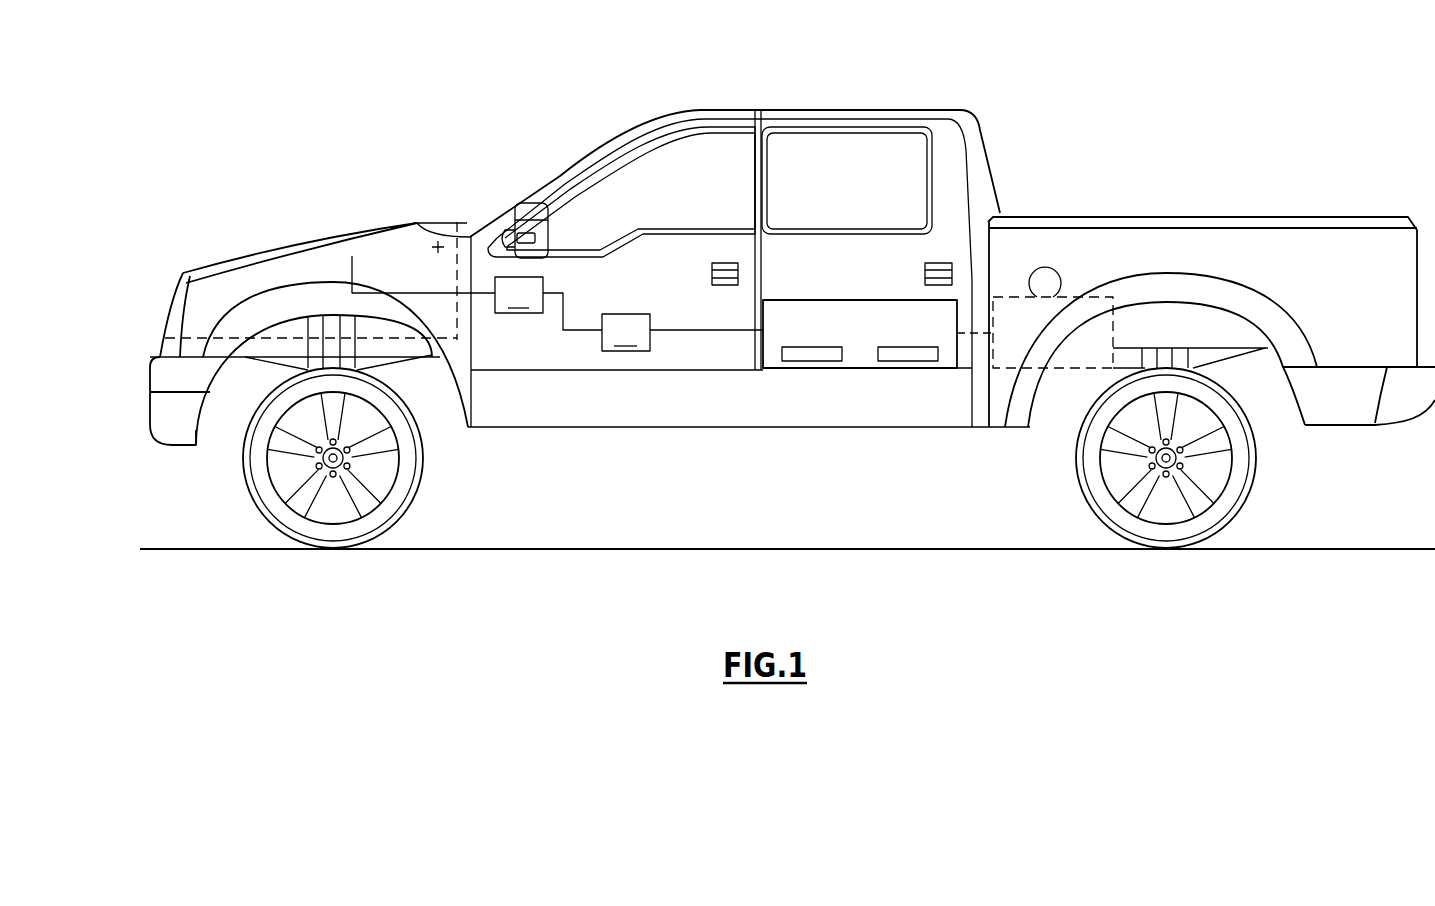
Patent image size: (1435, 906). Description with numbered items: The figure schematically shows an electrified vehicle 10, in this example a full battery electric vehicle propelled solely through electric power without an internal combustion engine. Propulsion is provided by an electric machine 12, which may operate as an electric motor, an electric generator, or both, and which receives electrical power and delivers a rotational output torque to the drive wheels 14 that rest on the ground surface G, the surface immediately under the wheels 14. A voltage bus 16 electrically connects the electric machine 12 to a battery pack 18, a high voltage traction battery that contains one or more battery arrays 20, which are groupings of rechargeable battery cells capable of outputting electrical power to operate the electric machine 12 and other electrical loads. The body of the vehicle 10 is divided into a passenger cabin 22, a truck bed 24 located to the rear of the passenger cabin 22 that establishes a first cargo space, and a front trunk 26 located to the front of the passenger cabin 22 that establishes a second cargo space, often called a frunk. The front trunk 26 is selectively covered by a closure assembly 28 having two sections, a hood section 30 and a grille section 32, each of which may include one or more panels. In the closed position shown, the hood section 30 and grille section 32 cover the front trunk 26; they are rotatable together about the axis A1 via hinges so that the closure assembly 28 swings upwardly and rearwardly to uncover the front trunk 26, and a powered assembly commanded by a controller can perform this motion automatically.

The electrified vehicle 10 is at (801, 90).
The electric machine 12 is at (1056, 294).
The drive wheels 14 is at (320, 530).
The voltage bus 16 is at (980, 350).
The battery pack 18 is at (853, 300).
The battery arrays 20 is at (895, 362).
The passenger cabin 22 is at (655, 165).
The truck bed 24 is at (1184, 205).
The front trunk 26 is at (433, 290).
The closure assembly 28 is at (276, 212).
The hood section 30 is at (343, 222).
The grille section 32 is at (152, 338).
The axis A1 is at (435, 256).
The ground surface G is at (528, 549).